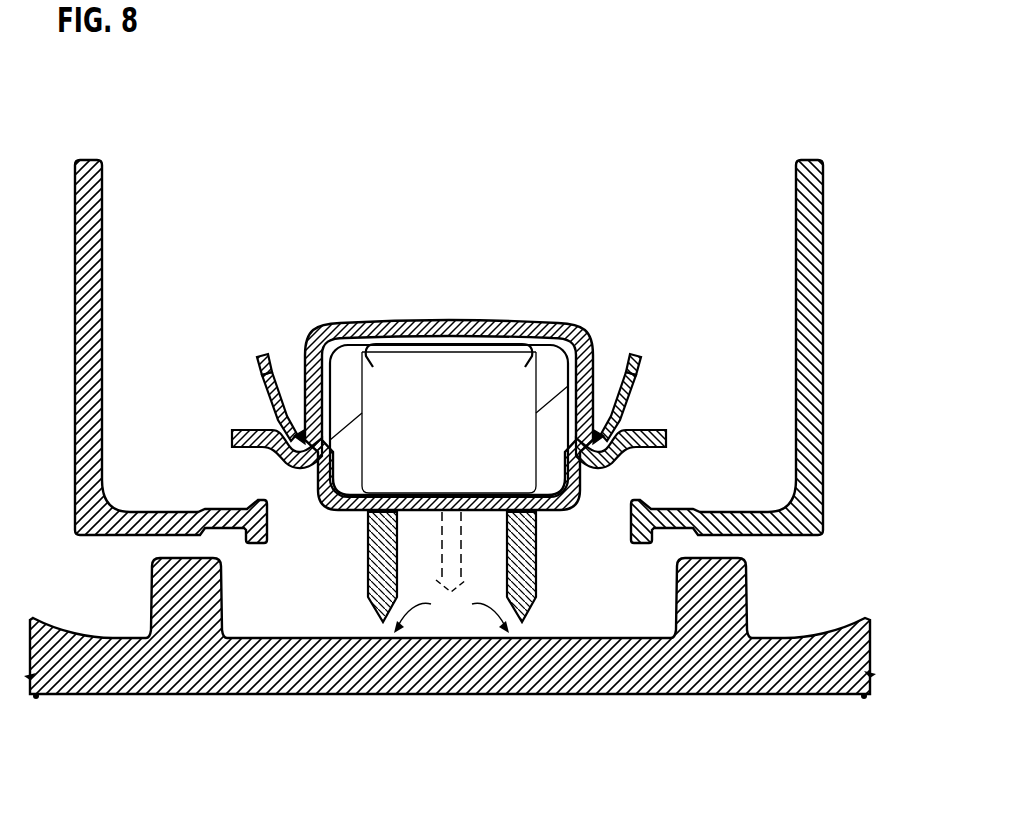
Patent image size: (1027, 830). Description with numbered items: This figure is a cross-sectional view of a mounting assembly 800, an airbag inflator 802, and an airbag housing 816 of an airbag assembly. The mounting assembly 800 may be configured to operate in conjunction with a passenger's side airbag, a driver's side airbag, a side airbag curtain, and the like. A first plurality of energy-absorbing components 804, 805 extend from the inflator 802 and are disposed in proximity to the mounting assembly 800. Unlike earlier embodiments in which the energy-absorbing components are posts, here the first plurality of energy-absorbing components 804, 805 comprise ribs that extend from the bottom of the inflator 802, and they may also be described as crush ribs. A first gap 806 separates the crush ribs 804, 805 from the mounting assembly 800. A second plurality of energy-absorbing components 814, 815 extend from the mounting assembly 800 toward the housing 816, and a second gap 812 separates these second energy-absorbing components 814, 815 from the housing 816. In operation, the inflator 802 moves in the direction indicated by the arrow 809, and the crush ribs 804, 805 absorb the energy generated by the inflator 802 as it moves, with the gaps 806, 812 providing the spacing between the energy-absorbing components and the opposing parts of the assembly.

The mounting assembly 800 is at (337, 697).
The airbag inflator 802 is at (546, 326).
The first energy-absorbing component 804 is at (368, 548).
The first energy-absorbing component 805 is at (538, 548).
The first gap 806 is at (451, 613).
The arrow 809 is at (461, 541).
The second gap 812 is at (150, 551).
The second energy-absorbing component 814 is at (150, 585).
The second energy-absorbing component 815 is at (748, 584).
The airbag housing 816 is at (103, 264).